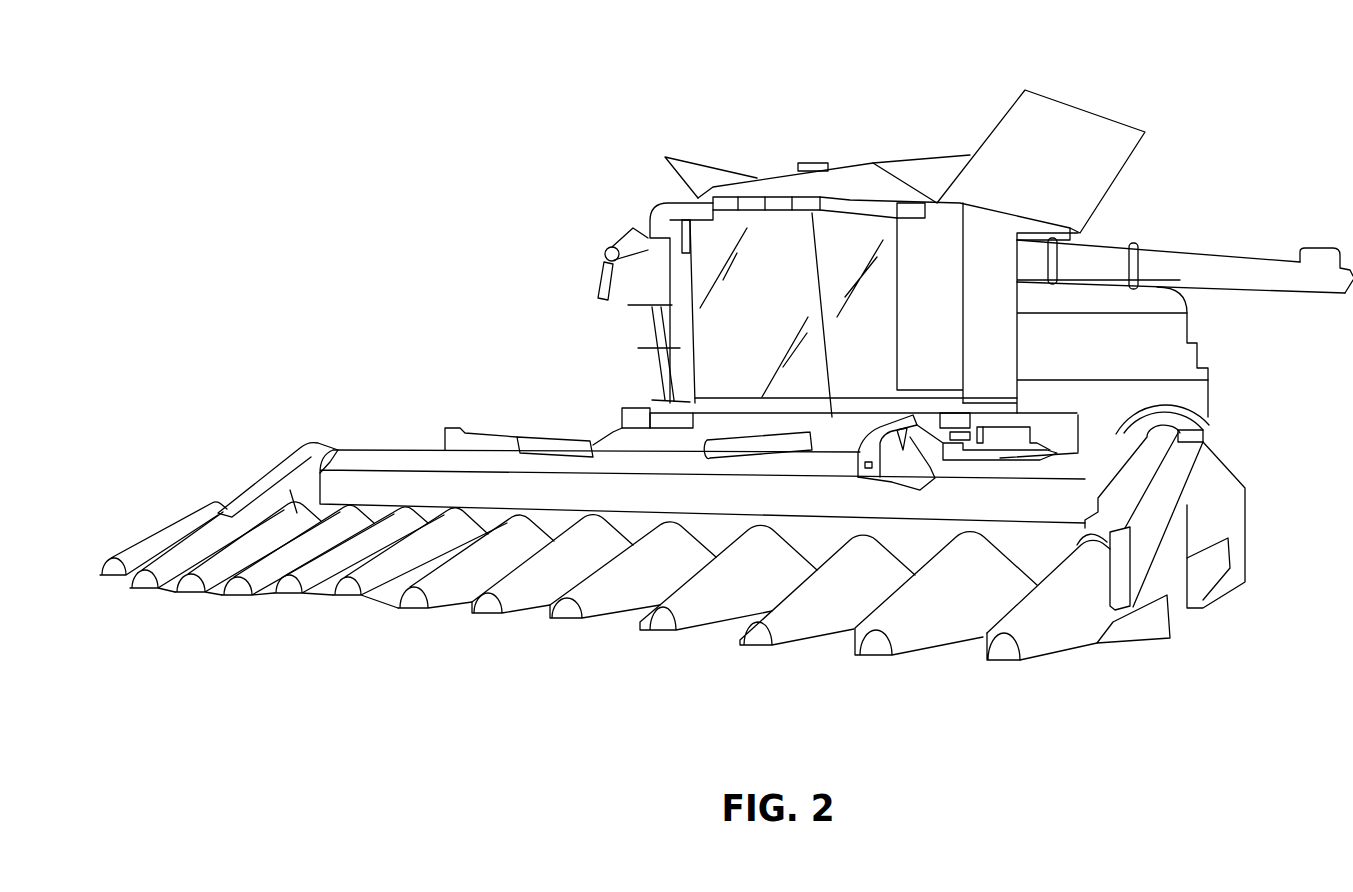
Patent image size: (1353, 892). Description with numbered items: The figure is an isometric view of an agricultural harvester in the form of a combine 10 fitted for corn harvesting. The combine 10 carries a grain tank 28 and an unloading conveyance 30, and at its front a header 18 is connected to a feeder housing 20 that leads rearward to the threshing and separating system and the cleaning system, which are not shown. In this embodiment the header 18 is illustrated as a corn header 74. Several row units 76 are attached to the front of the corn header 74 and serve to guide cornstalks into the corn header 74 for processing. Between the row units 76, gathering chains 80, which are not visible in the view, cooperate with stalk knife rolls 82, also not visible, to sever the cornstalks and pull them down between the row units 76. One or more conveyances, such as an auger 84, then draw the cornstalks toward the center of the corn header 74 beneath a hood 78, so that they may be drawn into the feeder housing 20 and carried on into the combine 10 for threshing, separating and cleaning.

The combine 10 is at (938, 116).
The header 18 is at (1245, 486).
The feeder housing 20 is at (837, 437).
The grain tank 28 is at (823, 160).
The unloading conveyance 30 is at (1245, 257).
The corn header 74 is at (1243, 528).
The row units 76 is at (690, 628).
The hood 78 is at (402, 448).
The gathering chains 80 is at (982, 640).
The stalk knife rolls 82 is at (978, 642).
The auger 84 is at (520, 498).